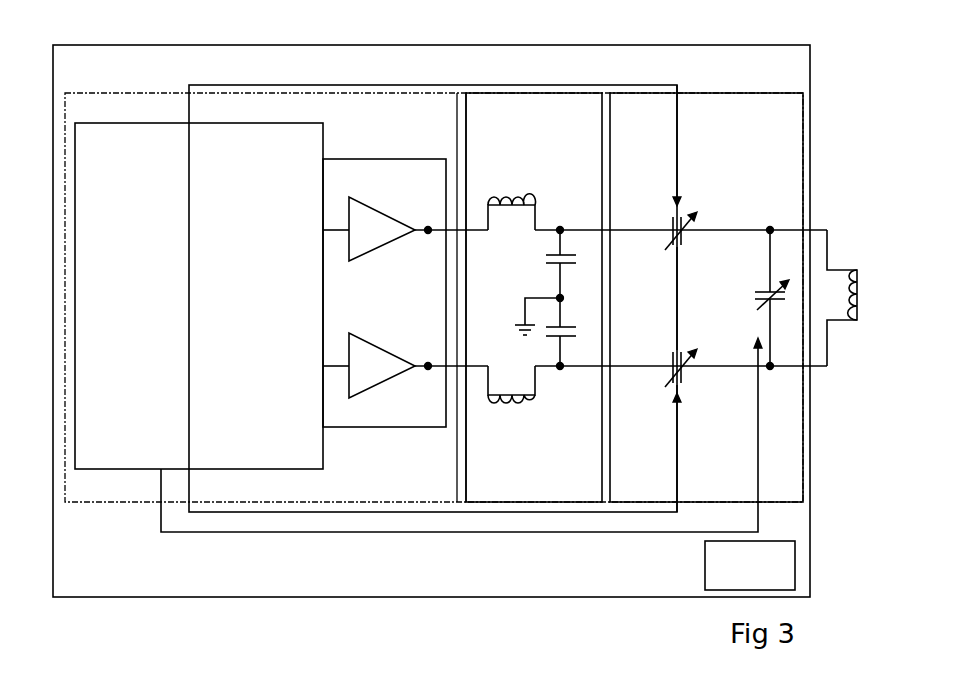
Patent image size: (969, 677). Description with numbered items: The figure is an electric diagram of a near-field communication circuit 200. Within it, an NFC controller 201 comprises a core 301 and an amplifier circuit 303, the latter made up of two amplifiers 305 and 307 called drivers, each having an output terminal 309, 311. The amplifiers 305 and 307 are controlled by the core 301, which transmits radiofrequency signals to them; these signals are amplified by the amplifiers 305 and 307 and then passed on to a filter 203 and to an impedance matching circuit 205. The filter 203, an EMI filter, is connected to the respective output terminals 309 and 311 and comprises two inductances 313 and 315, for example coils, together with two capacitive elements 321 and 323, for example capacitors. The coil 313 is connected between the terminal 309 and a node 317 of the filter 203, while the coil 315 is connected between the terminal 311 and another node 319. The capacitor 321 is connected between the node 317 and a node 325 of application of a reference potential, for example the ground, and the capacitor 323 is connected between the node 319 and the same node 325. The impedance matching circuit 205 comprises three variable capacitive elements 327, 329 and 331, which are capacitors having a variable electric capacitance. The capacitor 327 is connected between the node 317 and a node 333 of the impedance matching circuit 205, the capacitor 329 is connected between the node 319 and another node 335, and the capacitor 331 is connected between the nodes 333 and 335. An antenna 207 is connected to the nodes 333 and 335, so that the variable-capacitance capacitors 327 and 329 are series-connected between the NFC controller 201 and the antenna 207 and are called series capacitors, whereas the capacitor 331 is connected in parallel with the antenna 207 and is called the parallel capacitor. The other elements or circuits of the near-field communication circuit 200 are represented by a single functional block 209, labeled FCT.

The near-field communication circuit 200 is at (643, 45).
The NFC controller 201 is at (372, 85).
The filter 203 is at (530, 93).
The impedance matching circuit 205 is at (743, 93).
The antenna 207 is at (847, 264).
The functional block 209 is at (705, 566).
The core 301 is at (230, 470).
The amplifier circuit 303 is at (384, 329).
The amplifier 305 is at (367, 255).
The amplifier 307 is at (375, 344).
The output terminal 309 is at (427, 227).
The output terminal 311 is at (427, 373).
The inductance 313 is at (505, 190).
The inductance 315 is at (503, 410).
The node 317 is at (558, 227).
The node 319 is at (560, 373).
The capacitive element 321 is at (548, 260).
The capacitive element 323 is at (548, 338).
The node of application of a reference potential 325 is at (562, 297).
The variable capacitive element 327 is at (672, 250).
The variable capacitive element 329 is at (677, 347).
The variable capacitive element 331 is at (760, 292).
The node 333 is at (769, 228).
The node 335 is at (770, 370).